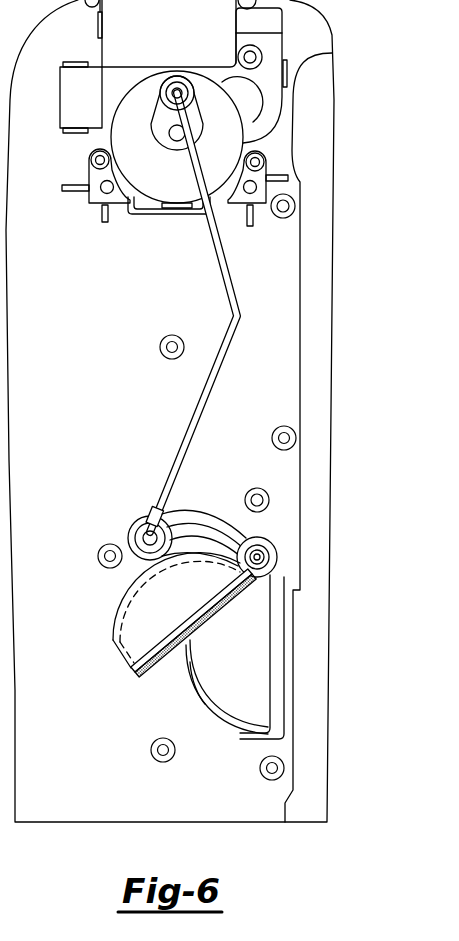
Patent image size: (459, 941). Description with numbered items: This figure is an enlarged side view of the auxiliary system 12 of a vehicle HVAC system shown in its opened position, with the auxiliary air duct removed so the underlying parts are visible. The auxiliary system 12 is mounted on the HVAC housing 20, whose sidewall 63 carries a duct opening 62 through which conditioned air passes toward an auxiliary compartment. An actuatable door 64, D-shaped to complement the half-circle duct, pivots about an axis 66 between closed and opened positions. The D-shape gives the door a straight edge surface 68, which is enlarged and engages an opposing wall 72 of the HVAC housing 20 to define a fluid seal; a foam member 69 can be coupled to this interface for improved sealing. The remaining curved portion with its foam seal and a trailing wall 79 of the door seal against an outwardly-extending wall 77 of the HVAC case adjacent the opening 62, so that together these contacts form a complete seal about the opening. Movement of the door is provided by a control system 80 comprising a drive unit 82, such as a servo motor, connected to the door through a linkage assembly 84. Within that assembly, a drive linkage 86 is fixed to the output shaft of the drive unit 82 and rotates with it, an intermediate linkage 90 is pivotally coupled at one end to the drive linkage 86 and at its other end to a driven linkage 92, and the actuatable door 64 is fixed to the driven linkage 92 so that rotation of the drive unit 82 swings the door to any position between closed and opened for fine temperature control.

The auxiliary system 12 is at (309, 153).
The HVAC housing 20 is at (287, 412).
The duct opening 62 is at (237, 684).
The sidewall 63 is at (165, 690).
The actuatable door 64 is at (164, 610).
The axis 66 is at (266, 557).
The straight edge surface 68 is at (197, 638).
The foam member 69 is at (233, 602).
The opposing wall 72 is at (262, 713).
The outwardly-extending wall 77 is at (187, 693).
The trailing wall 79 is at (111, 632).
The control system 80 is at (292, 275).
The drive unit 82 is at (215, 100).
The linkage assembly 84 is at (251, 359).
The drive linkage 86 is at (157, 124).
The intermediate linkage 90 is at (231, 258).
The driven linkage 92 is at (216, 530).